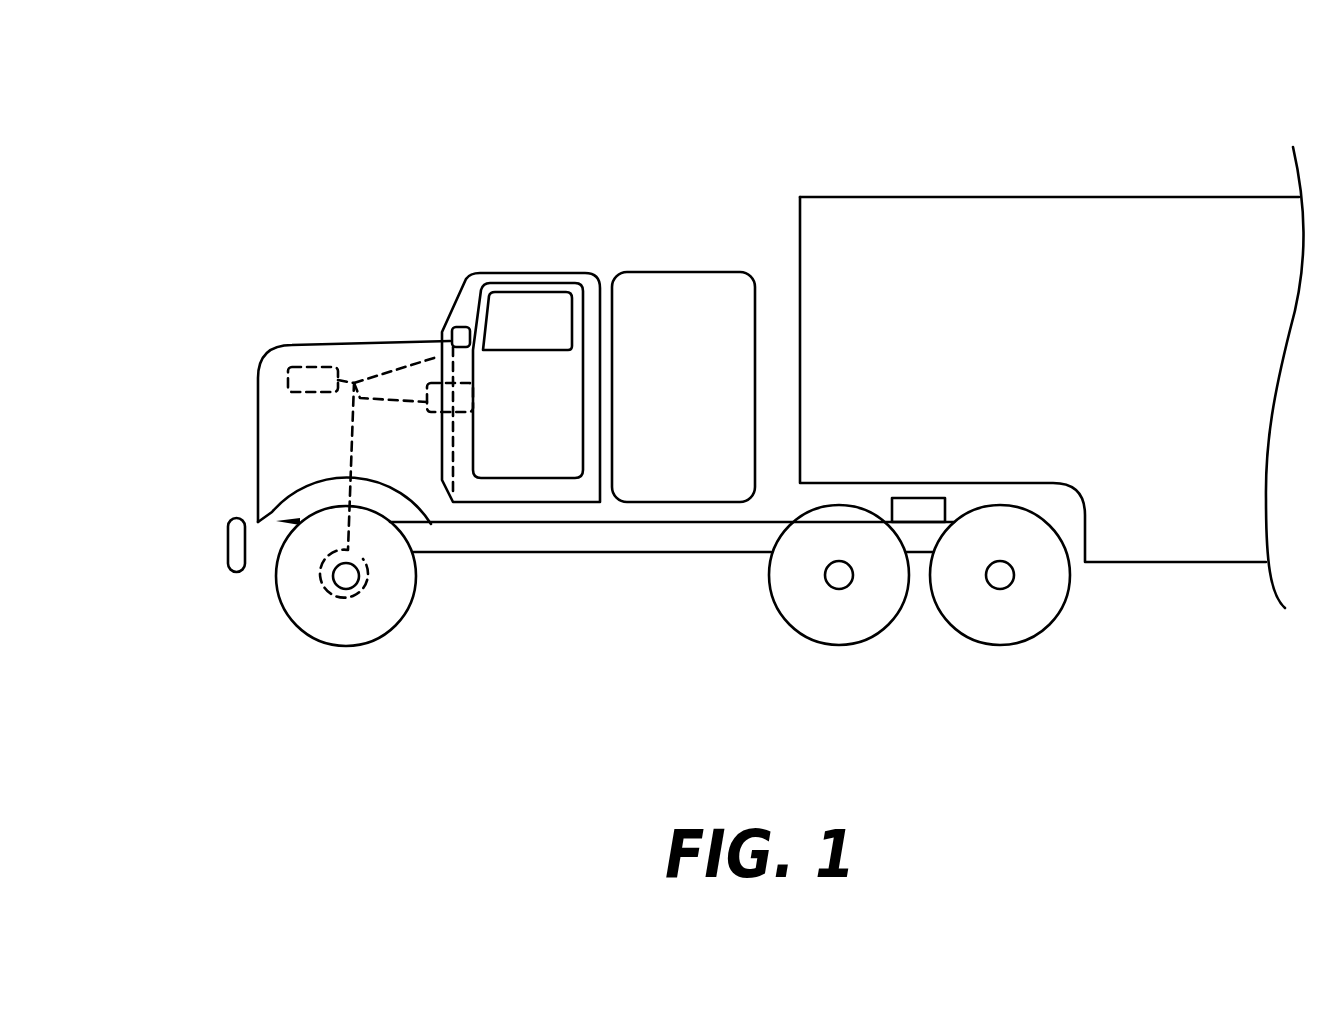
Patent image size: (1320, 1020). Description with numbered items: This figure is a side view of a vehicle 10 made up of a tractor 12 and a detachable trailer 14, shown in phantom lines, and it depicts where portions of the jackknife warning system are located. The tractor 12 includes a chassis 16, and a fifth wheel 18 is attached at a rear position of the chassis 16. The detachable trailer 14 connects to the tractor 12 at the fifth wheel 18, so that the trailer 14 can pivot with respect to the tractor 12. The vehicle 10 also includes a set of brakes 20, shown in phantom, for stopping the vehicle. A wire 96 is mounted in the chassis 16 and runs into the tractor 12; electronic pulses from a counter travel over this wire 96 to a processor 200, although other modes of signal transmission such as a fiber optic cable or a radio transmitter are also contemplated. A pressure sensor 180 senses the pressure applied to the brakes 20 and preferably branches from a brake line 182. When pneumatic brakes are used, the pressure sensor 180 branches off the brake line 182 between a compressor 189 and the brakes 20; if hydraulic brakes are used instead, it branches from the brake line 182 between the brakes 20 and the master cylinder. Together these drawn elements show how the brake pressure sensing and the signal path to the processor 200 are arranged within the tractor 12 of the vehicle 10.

The vehicle 10 is at (552, 78).
The tractor 12 is at (573, 273).
The detachable trailer 14 is at (1062, 218).
The chassis 16 is at (579, 535).
The fifth wheel 18 is at (918, 510).
The brakes 20 is at (367, 580).
The wire 96 is at (700, 522).
The pressure sensor 180 is at (453, 327).
The brake line 182 is at (348, 435).
The compressor 189 is at (315, 372).
The processor 200 is at (437, 398).